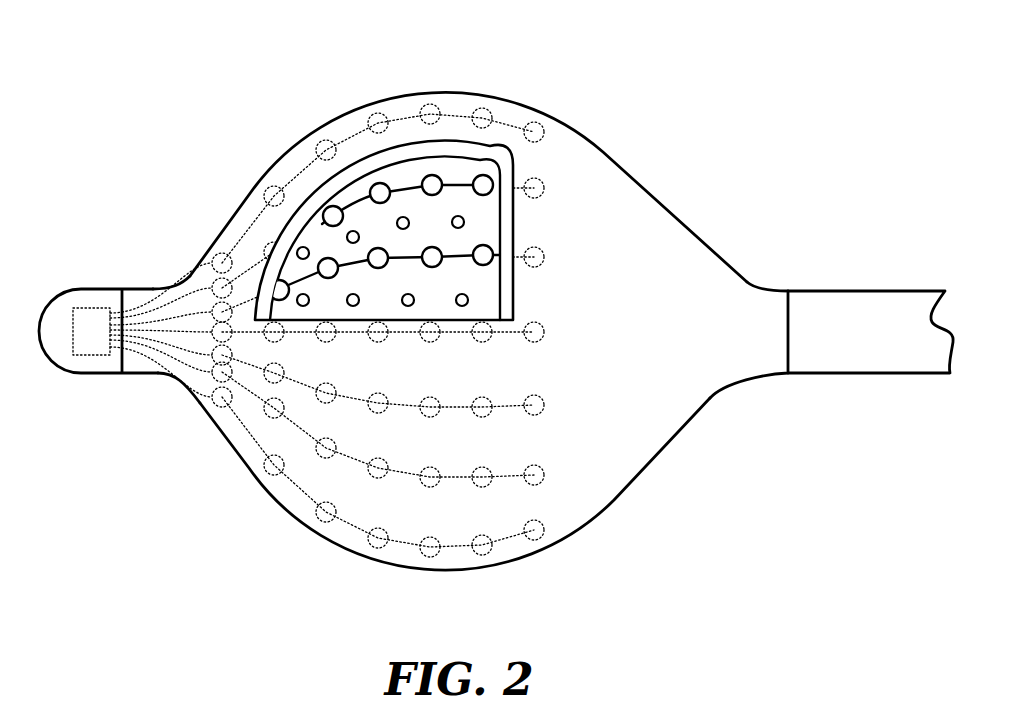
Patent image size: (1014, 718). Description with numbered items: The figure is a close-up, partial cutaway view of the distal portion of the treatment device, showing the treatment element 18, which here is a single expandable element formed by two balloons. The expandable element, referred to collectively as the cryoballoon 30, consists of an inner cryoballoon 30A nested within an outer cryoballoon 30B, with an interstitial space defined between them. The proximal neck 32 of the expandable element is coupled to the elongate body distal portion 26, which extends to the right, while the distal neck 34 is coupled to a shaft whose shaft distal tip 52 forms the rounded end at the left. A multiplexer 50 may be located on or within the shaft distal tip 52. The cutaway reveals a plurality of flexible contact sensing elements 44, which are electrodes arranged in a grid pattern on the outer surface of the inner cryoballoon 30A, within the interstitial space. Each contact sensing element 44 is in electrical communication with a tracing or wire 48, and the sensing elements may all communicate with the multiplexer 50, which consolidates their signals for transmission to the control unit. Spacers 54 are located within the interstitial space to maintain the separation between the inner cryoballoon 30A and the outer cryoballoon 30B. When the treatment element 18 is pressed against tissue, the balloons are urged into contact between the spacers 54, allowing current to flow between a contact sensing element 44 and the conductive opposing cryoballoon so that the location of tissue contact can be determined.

The treatment element 18 is at (235, 497).
The elongate body distal portion 26 is at (898, 288).
The cryoballoon 30 is at (270, 152).
The inner cryoballoon 30A is at (429, 209).
The outer cryoballoon 30B is at (622, 163).
The proximal neck 32 is at (753, 277).
The distal neck 34 is at (150, 289).
The contact sensing elements 44 is at (432, 175).
The tracing or wire 48 is at (455, 183).
The multiplexer 50 is at (92, 315).
The shaft distal tip 52 is at (58, 352).
The spacers 54 is at (464, 222).